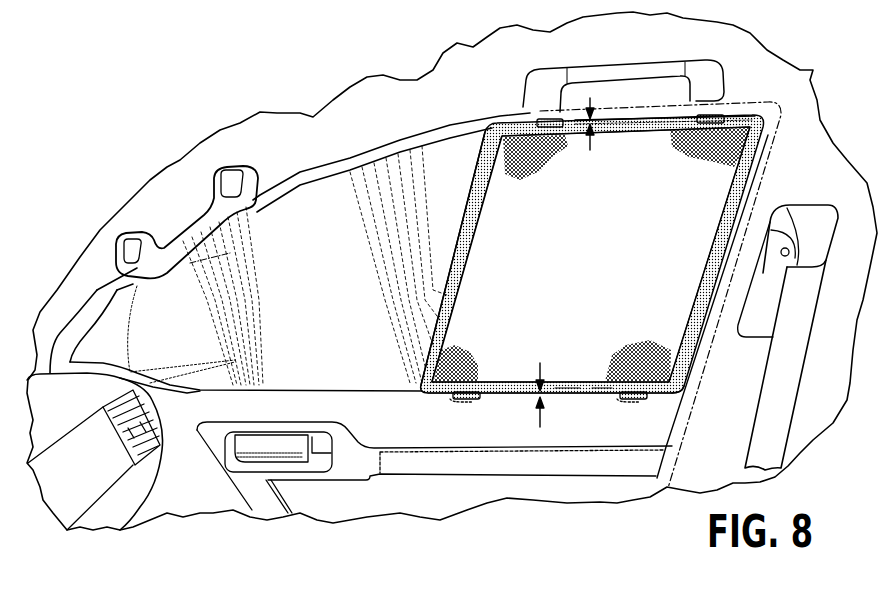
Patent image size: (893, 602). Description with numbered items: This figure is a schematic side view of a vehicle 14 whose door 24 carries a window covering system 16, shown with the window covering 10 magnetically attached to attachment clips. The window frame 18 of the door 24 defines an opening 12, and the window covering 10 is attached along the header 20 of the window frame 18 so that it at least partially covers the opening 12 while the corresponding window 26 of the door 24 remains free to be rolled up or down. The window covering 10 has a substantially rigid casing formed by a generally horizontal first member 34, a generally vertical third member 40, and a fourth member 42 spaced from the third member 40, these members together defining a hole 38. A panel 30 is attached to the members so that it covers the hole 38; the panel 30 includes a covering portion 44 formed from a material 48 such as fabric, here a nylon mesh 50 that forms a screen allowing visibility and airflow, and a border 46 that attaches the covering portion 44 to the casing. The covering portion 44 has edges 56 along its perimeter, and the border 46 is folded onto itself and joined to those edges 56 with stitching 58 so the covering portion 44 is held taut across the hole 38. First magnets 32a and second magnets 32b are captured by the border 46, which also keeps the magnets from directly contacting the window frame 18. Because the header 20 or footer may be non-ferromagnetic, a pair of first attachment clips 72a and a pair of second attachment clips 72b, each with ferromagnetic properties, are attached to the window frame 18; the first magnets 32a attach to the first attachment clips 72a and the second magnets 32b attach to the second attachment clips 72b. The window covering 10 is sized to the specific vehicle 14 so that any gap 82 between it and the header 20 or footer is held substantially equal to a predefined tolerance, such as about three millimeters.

The window covering 10 is at (491, 138).
The opening 12 is at (471, 178).
The vehicle 14 is at (300, 108).
The window covering system 16 is at (503, 104).
The window frame 18 is at (353, 143).
The header 20 is at (643, 116).
The door 24 is at (200, 487).
The window 26 is at (287, 265).
The panel 30 is at (591, 254).
The first magnets 32a is at (552, 117).
The second magnets 32b is at (463, 400).
The first member 34 is at (613, 120).
The hole 38 is at (500, 246).
The third member 40 is at (495, 396).
The fourth member 42 is at (753, 163).
The covering portion 44 is at (742, 140).
The border 46 is at (698, 328).
The material 48 is at (680, 380).
The nylon mesh 50 is at (667, 359).
The edges 56 is at (602, 396).
The stitching 58 is at (566, 394).
The first attachment clips 72a is at (562, 120).
The second attachment clips 72b is at (474, 398).
The gap 82 is at (565, 262).